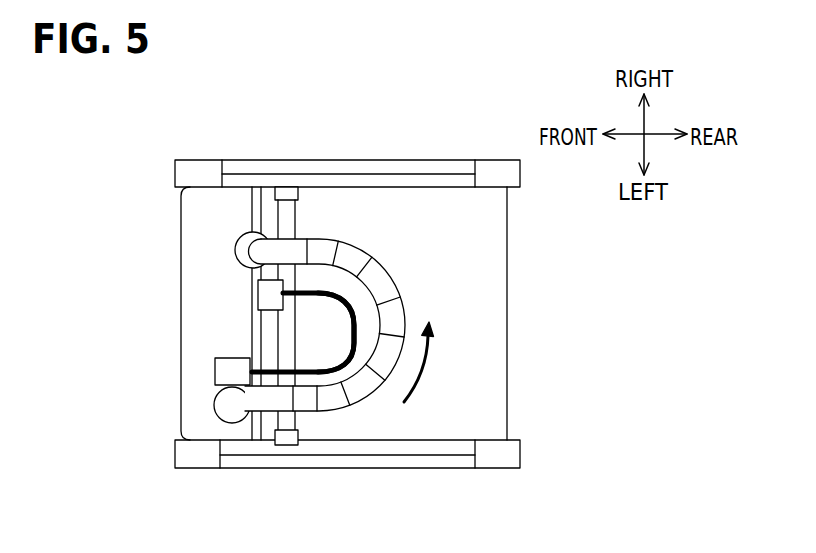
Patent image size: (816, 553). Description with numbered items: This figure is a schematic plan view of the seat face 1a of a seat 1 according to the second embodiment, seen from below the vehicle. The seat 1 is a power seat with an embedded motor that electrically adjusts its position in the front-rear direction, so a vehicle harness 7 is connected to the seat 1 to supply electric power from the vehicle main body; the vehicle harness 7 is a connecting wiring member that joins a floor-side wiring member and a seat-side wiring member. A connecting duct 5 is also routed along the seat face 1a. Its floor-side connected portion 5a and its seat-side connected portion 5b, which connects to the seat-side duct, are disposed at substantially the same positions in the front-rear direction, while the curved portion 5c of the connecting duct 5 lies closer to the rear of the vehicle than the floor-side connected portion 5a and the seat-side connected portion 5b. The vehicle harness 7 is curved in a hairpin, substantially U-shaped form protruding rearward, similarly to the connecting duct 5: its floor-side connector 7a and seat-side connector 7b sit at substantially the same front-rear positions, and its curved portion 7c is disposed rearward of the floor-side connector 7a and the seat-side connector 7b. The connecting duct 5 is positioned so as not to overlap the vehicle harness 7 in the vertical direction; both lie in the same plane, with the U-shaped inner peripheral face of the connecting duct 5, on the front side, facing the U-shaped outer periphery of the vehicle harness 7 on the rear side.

The seat 1 is at (507, 300).
The seat face 1a is at (492, 365).
The connecting duct 5 is at (320, 413).
The floor-side connected portion 5a is at (216, 410).
The seat-side connected portion 5b is at (242, 232).
The curved portion 5c is at (405, 378).
The vehicle harness 7 is at (322, 240).
The floor-side connector 7a is at (213, 372).
The seat-side connector 7b is at (258, 288).
The curved portion 7c is at (382, 300).